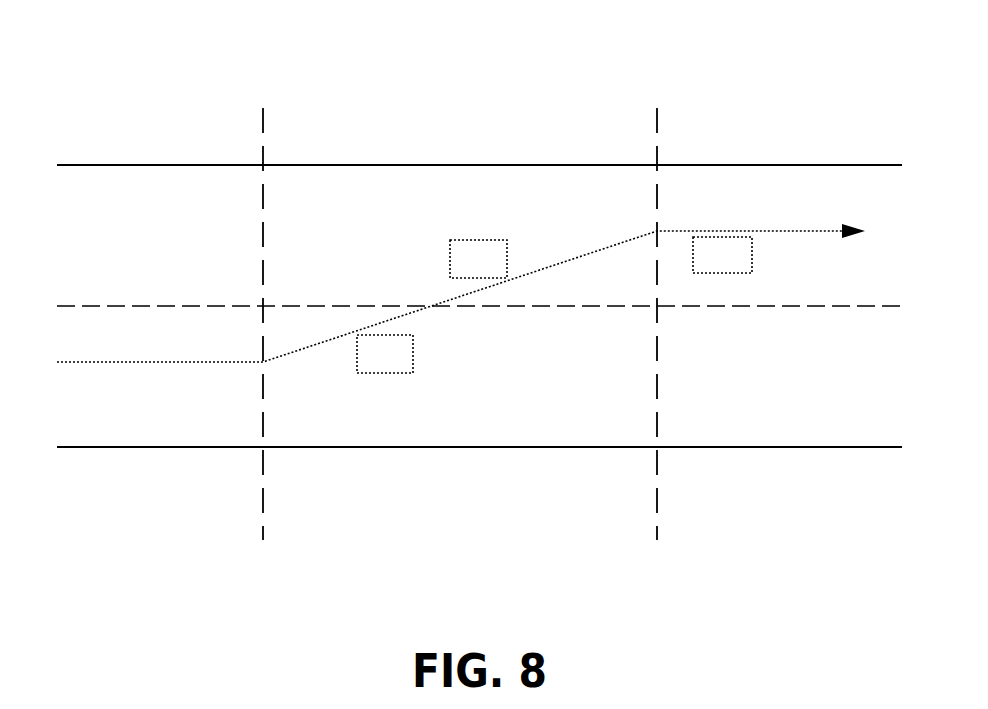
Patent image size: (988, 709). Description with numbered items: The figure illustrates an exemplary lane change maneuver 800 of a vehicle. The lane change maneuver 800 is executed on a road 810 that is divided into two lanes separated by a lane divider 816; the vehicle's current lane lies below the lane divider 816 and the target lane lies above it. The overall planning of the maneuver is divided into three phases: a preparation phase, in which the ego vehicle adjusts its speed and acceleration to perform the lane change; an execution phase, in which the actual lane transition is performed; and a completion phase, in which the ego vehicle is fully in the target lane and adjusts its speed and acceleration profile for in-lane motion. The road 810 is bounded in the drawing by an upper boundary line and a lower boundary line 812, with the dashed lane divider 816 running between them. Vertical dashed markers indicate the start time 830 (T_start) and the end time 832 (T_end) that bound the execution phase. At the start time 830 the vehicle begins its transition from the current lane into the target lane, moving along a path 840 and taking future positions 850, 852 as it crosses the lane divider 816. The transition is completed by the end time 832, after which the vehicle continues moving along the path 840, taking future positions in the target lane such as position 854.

The lane change maneuver 800 is at (104, 66).
The road 810 is at (163, 165).
The lower bound line 812 is at (400, 447).
The lane divider 816 is at (127, 306).
The start time 830 is at (262, 114).
The end time 832 is at (656, 114).
The path 840 is at (331, 341).
The future position 850 is at (403, 366).
The future position 852 is at (496, 271).
The position 854 is at (740, 266).